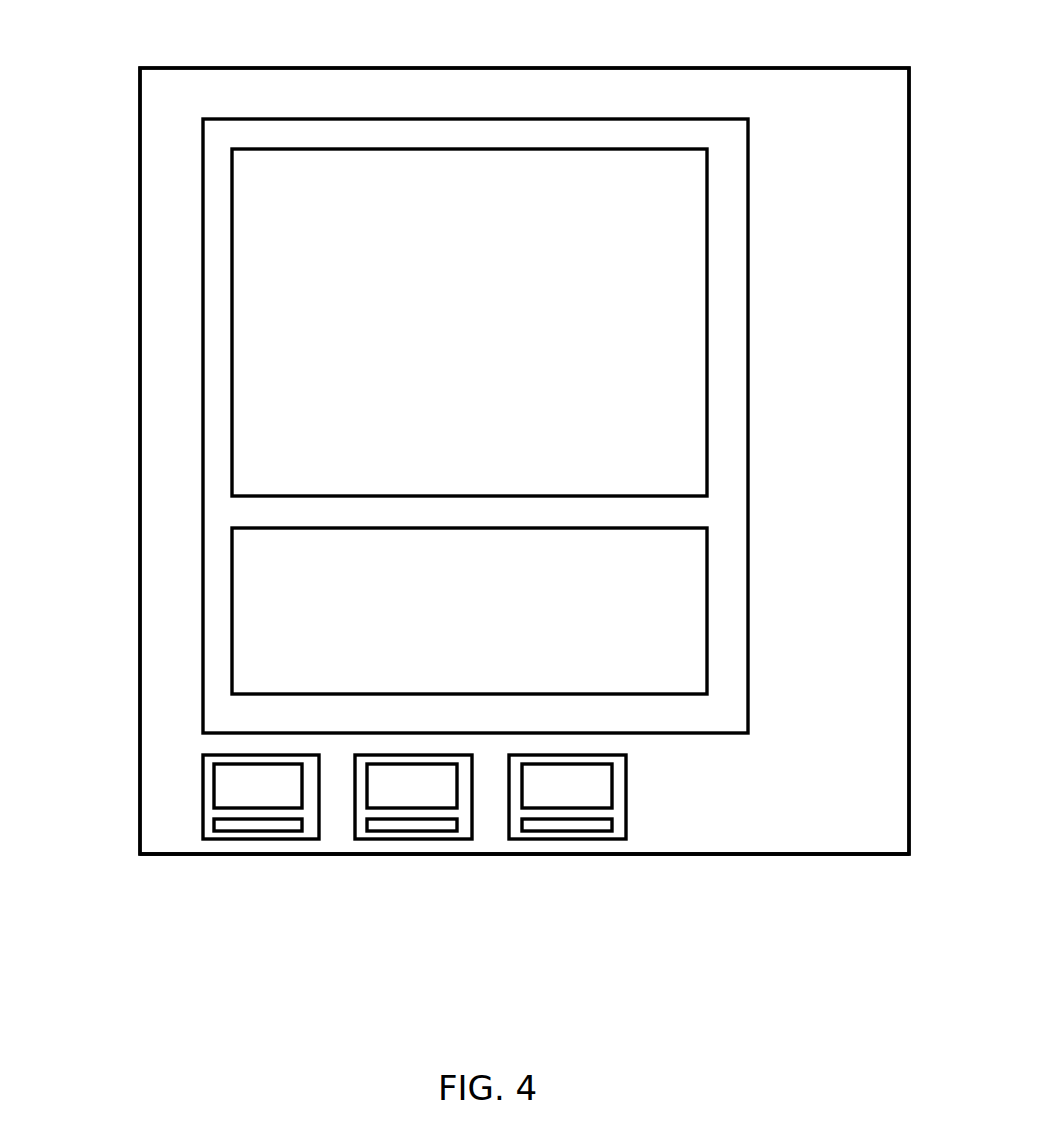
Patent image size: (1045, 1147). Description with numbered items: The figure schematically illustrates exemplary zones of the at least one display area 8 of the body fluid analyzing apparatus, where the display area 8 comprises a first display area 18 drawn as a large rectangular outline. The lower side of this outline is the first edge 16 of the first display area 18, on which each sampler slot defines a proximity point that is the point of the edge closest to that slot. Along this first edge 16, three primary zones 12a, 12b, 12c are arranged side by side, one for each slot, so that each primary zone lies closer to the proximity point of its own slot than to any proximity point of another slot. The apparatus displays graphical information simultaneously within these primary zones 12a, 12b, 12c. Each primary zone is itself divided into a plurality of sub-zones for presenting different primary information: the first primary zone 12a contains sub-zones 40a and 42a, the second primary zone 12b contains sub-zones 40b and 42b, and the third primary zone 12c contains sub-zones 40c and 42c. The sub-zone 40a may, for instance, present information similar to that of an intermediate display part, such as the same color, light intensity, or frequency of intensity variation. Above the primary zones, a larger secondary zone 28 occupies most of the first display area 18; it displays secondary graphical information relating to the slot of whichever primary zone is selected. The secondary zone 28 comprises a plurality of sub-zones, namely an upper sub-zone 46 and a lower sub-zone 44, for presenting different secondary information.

The display area 8 is at (830, 68).
The first display area 18 is at (524, 461).
The first edge 16 is at (855, 855).
The secondary zone 28 is at (203, 425).
The sub-zone 46 is at (707, 325).
The sub-zone 44 is at (707, 612).
The primary zone 12a is at (269, 868).
The primary zone 12b is at (436, 868).
The primary zone 12c is at (606, 875).
The sub-zone 40a is at (293, 831).
The sub-zone 40b is at (440, 831).
The sub-zone 40c is at (590, 831).
The sub-zone 42a is at (302, 783).
The sub-zone 42b is at (457, 783).
The sub-zone 42c is at (612, 783).